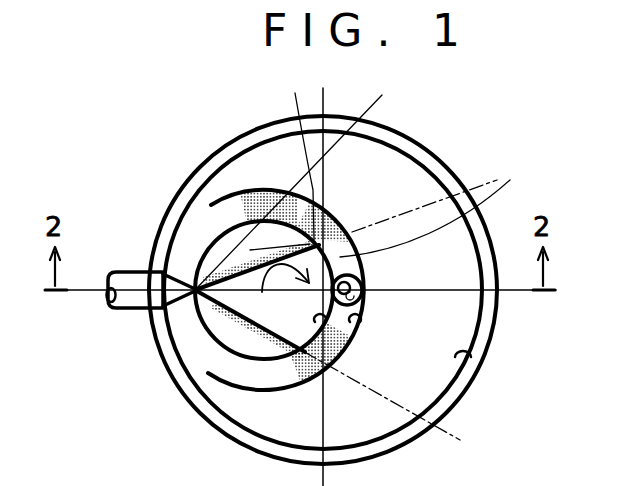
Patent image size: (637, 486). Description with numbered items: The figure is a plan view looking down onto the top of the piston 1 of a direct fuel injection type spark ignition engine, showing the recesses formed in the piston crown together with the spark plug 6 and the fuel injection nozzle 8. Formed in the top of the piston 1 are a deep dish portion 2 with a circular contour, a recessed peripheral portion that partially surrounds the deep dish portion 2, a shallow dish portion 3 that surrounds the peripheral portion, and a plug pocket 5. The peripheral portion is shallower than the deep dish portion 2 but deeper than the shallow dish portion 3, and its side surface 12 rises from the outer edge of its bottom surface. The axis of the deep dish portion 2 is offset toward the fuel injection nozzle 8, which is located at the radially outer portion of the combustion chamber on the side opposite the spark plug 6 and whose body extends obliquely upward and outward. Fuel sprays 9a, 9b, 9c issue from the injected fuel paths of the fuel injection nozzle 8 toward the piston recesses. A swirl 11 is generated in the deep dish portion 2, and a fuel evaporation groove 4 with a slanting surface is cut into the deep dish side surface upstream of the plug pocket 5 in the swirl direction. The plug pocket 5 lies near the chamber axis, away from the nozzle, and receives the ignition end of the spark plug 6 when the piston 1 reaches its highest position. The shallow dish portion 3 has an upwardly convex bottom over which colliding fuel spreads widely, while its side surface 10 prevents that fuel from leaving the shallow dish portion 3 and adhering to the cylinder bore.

The piston 1 is at (368, 458).
The deep recessed dish portion 2 is at (214, 332).
The shallow recessed dish portion 3 is at (397, 180).
The fuel evaporation groove 4 is at (300, 231).
The plug pocket 5 is at (350, 304).
The spark plug 6 is at (357, 280).
The fuel injection nozzle 8 is at (133, 272).
The fuel spray 9a is at (218, 254).
The fuel spray 9b is at (214, 326).
The fuel spray 9c is at (228, 348).
The side surface of the shallow dish portion 10 is at (473, 355).
The swirl 11 is at (285, 294).
The side surface of the peripheral portion 12 is at (360, 332).